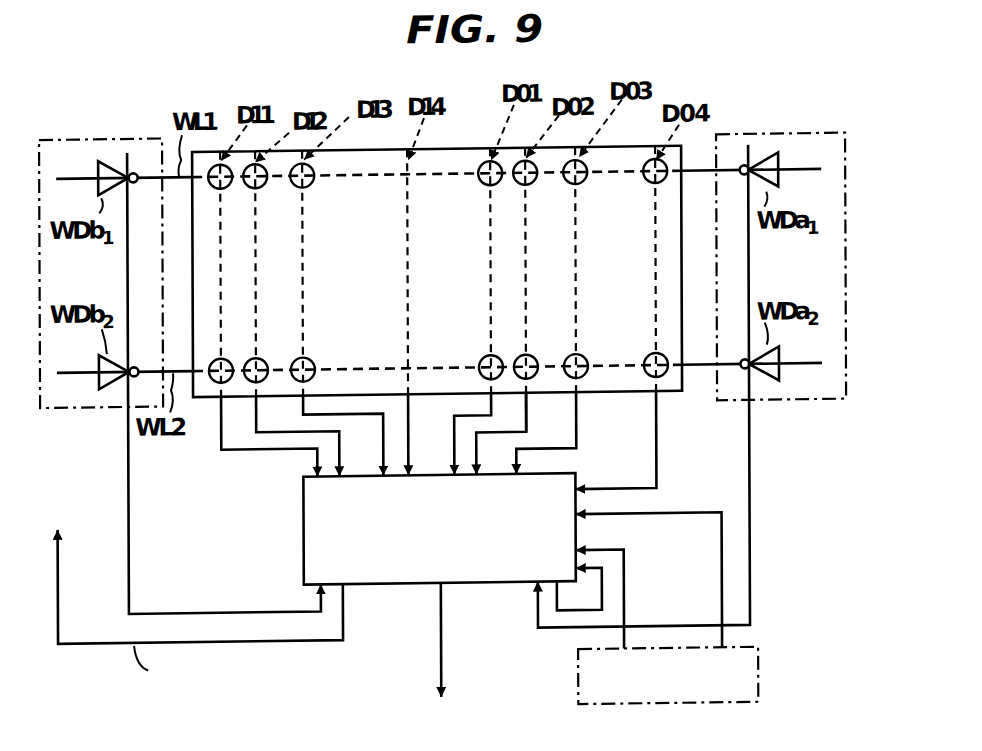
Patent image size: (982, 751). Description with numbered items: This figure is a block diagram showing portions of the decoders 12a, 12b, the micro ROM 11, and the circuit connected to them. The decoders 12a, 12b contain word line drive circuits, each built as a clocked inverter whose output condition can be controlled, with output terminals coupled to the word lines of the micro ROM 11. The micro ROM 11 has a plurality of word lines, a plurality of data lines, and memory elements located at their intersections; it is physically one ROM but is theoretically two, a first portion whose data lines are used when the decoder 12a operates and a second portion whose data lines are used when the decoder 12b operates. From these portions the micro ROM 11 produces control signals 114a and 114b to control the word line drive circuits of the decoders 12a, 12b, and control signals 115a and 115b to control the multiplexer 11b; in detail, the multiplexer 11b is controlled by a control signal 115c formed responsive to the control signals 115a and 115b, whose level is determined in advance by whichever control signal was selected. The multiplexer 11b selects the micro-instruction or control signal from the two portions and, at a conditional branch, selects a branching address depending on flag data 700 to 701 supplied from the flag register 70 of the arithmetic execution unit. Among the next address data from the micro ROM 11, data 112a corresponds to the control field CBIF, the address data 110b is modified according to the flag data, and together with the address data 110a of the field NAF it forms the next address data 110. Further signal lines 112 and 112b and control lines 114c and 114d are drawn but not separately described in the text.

The micro ROM 11 is at (458, 151).
The multiplexer 11b is at (303, 531).
The decoder 12a is at (758, 142).
The decoder 12b is at (92, 139).
The next address data 110 is at (80, 643).
The address data 110a is at (530, 417).
The address data 110b is at (252, 408).
The output line 112 is at (443, 668).
The data 112a is at (577, 453).
The data output line 112b is at (302, 416).
The control signal 114a is at (453, 421).
The control signal 114b is at (220, 418).
The word line feedback line 114c is at (128, 482).
The word line feedback line 114d is at (750, 517).
The control signal 115a is at (657, 436).
The control signal 115b is at (478, 436).
The control signal 115c is at (570, 617).
The flag data 700 is at (721, 601).
The flag data 701 is at (627, 575).
The flag register 70 is at (758, 659).